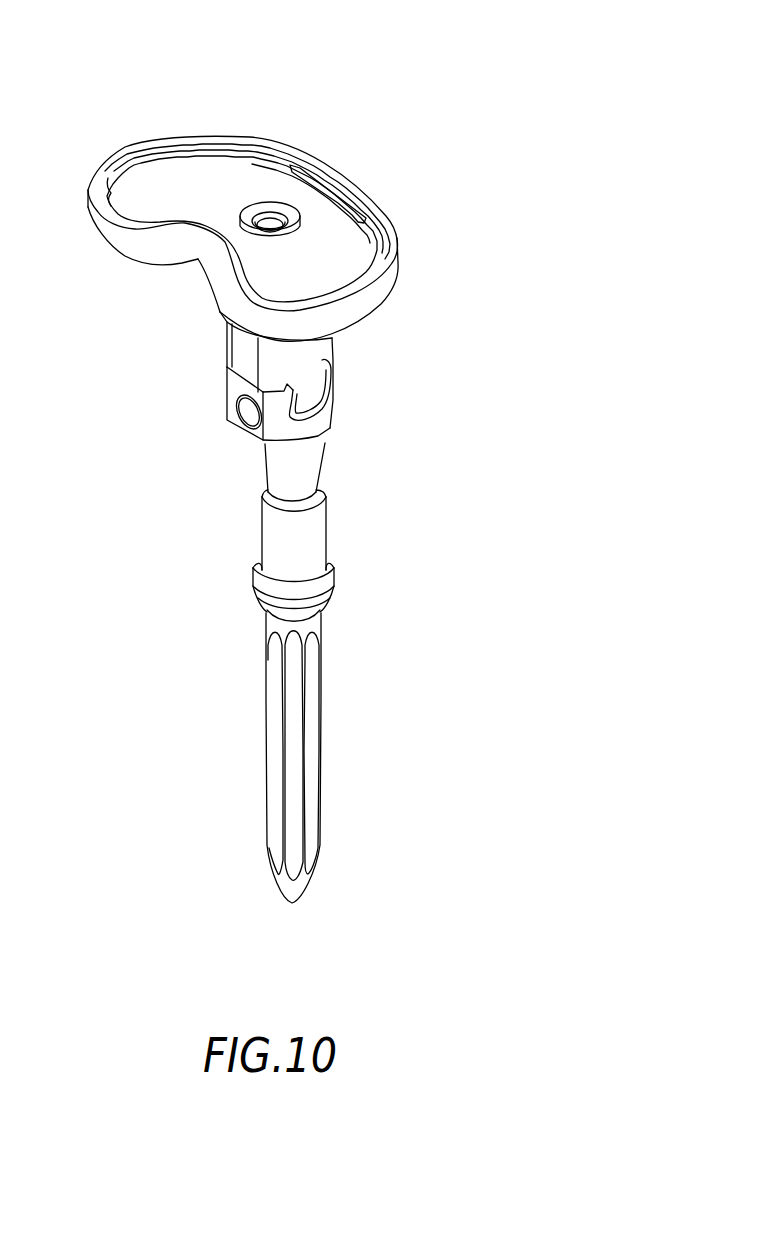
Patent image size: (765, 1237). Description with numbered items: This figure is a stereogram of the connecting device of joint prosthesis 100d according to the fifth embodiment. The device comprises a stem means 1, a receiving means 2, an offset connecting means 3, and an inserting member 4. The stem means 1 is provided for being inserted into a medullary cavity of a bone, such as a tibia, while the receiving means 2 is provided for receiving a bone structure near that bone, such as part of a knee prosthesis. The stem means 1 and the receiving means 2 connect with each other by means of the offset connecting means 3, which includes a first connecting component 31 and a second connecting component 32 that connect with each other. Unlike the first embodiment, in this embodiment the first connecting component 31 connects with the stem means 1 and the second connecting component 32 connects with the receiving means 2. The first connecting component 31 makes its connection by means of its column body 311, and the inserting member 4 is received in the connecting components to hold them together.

The connecting device of joint prosthesis 100d is at (480, 82).
The receiving means 2 is at (207, 163).
The offset connecting means 3 is at (329, 409).
The second connecting component 32 is at (313, 352).
The first connecting component 31 is at (308, 467).
The column body 311 is at (267, 475).
The inserting member 4 is at (247, 408).
The stem means 1 is at (310, 778).